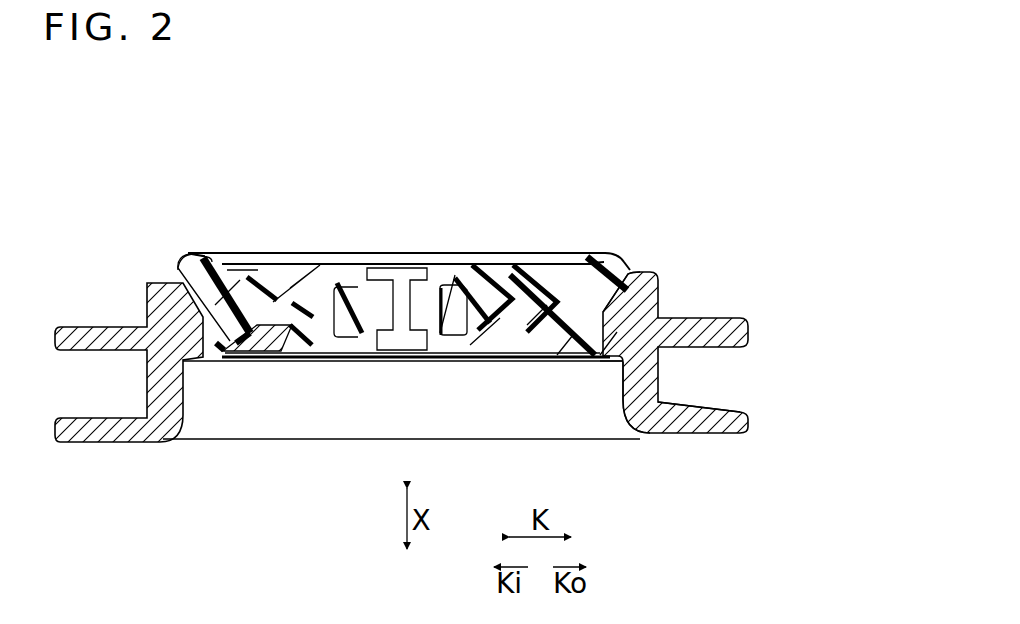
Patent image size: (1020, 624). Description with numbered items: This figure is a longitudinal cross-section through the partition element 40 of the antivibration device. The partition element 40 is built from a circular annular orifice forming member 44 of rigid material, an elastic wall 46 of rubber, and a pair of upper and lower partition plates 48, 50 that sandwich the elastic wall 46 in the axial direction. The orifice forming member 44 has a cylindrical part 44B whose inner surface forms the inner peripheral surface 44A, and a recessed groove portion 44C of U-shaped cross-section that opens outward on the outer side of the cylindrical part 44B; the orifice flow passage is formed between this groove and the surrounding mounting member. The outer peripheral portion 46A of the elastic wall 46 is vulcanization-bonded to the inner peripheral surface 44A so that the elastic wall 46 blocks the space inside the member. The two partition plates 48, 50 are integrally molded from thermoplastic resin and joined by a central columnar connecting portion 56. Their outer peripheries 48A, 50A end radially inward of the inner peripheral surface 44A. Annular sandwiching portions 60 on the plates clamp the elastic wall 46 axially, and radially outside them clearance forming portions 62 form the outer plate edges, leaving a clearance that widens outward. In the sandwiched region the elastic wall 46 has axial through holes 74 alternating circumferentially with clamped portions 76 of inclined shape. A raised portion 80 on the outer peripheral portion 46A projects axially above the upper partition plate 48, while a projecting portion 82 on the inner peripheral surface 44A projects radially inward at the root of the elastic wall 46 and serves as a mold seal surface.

The partition element 40 is at (378, 133).
The orifice forming member 44 is at (700, 318).
The inner peripheral surface 44A is at (617, 395).
The cylindrical part 44B is at (642, 266).
The recessed groove portion 44C is at (703, 408).
The elastic wall 46 is at (523, 268).
The outer peripheral portion 46A is at (198, 252).
The partition plate 48 is at (453, 262).
The outer periphery 48A is at (590, 260).
The partition plate 50 is at (450, 362).
The outer periphery 50A is at (586, 362).
The connecting portion 56 is at (405, 255).
The sandwiching portion 60 is at (493, 265).
The clearance forming portion 62 is at (572, 262).
The through hole 74 is at (283, 320).
The clamped portion 76 is at (562, 338).
The raised portion 80 is at (165, 248).
The projecting portion 82 is at (193, 362).